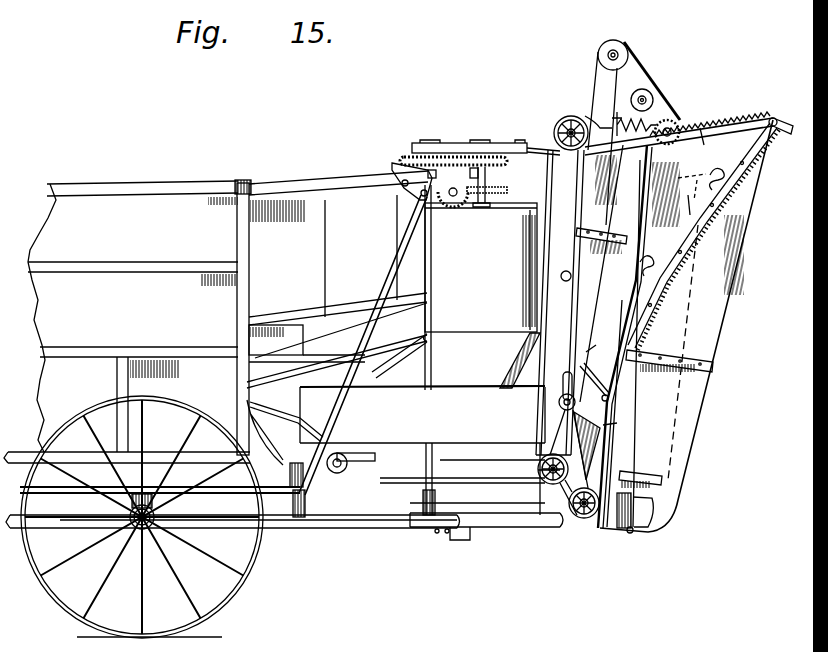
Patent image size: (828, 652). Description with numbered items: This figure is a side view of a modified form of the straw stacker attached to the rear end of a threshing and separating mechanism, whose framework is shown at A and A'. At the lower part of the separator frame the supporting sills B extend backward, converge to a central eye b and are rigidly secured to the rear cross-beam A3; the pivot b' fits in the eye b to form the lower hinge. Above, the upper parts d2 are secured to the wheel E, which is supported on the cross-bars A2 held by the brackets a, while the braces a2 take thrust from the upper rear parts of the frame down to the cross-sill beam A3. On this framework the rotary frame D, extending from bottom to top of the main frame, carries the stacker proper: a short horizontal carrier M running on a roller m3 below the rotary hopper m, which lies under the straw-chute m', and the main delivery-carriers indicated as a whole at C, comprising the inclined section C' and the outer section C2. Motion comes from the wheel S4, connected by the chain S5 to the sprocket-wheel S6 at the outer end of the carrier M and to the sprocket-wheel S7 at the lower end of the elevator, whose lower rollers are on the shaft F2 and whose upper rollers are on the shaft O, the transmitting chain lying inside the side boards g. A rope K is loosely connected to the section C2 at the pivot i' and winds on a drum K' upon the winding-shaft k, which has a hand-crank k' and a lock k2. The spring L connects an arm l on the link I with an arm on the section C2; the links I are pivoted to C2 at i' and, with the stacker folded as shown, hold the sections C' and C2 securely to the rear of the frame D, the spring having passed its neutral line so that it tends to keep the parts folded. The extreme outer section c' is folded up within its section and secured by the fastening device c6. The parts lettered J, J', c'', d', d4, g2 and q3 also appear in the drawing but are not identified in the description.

The separator framework A is at (232, 401).
The separator framework A' is at (333, 326).
The cross-bars A2 is at (472, 200).
The rear cross-beam A3 is at (296, 520).
The supporting sills B is at (340, 530).
The main delivery-carriers C is at (681, 326).
The stacker-section C' is at (644, 343).
The stacker-section C2 is at (634, 292).
The rotary frame D is at (572, 272).
The wheel E is at (392, 165).
The shaft F2 is at (590, 520).
The links I is at (745, 125).
The bar J is at (708, 240).
The bar J' is at (699, 145).
The rope K is at (702, 235).
The drum K' is at (594, 382).
The spring L is at (698, 128).
The horizontal carrier M is at (290, 450).
The shaft O is at (652, 96).
The wheel S4 is at (562, 122).
The chain S5 is at (572, 278).
The sprocket-wheel S6 is at (550, 486).
The sprocket-wheel S7 is at (582, 520).
The brackets a is at (442, 203).
The braces a2 is at (330, 424).
The eye b is at (428, 547).
The pivot b' is at (446, 547).
The outer section c' is at (684, 352).
The bar c'' is at (619, 416).
The fastening device c6 is at (690, 205).
The bar d' is at (486, 526).
The upper parts d2 is at (514, 148).
The strut d4 is at (422, 500).
The side boards g is at (612, 264).
The hook g2 is at (708, 177).
The pivot i' is at (783, 107).
The winding-shaft k is at (549, 384).
The hand-crank k' is at (575, 438).
The lock k2 is at (587, 343).
The arm l is at (594, 115).
The rotary hopper m is at (422, 424).
The straw-chute m' is at (481, 267).
The roller m3 is at (345, 468).
The pulley q3 is at (626, 44).